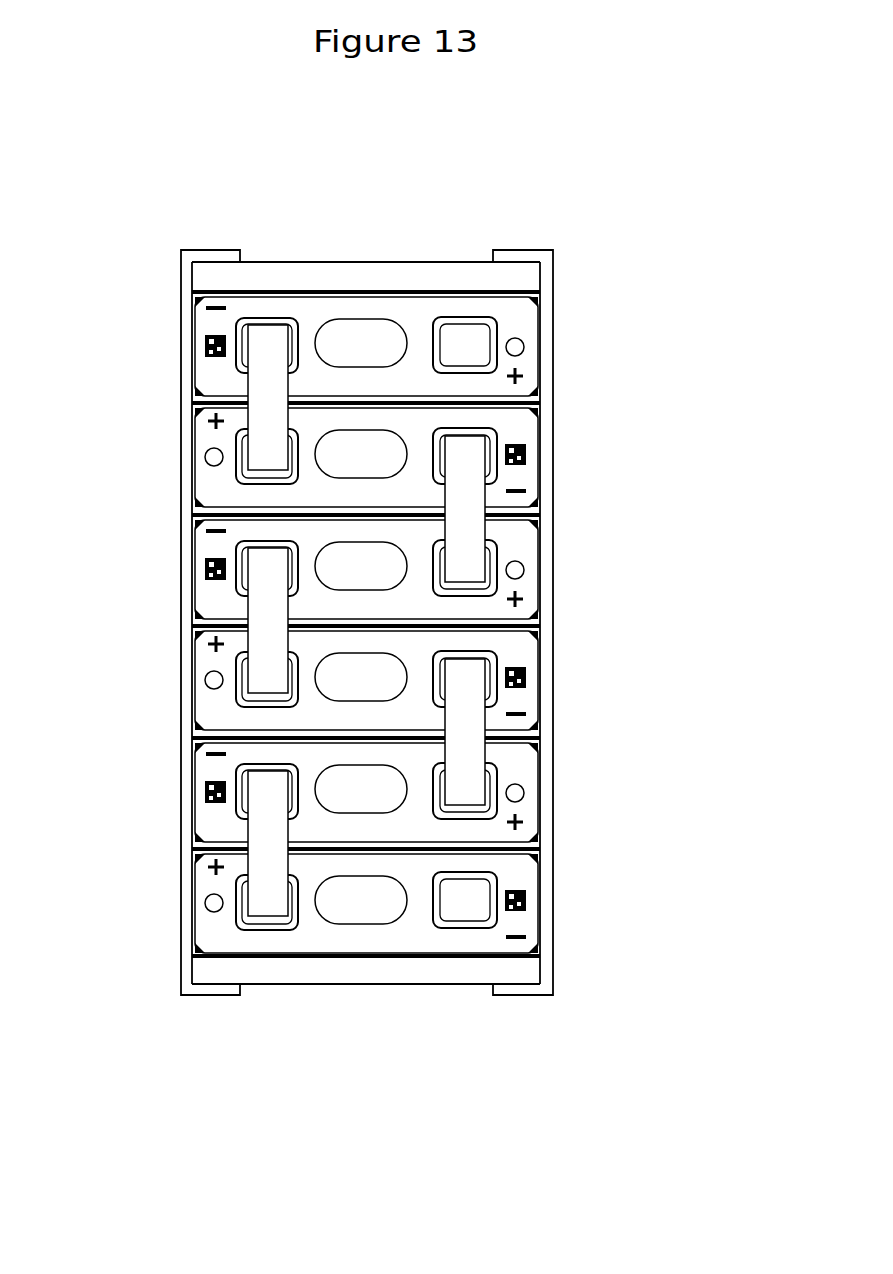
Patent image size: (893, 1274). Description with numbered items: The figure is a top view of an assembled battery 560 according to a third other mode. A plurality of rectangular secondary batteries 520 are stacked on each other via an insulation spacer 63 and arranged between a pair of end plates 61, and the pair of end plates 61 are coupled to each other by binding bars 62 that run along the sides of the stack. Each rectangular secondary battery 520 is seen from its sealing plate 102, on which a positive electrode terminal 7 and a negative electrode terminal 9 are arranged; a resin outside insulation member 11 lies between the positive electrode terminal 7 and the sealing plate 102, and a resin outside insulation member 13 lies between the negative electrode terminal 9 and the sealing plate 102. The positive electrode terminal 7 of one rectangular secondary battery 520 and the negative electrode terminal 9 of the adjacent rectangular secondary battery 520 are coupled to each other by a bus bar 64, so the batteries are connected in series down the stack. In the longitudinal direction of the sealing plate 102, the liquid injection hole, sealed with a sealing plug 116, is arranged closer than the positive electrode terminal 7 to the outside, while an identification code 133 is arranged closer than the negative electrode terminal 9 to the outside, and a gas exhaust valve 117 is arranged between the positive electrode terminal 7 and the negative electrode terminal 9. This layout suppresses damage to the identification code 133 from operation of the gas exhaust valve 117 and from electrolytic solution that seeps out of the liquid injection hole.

The assembled battery 560 is at (107, 143).
The end plate 61 is at (290, 275).
The binding bar 62 is at (545, 458).
The insulation spacer 63 is at (532, 395).
The bus bar 64 is at (266, 390).
The sealing plate 102 is at (420, 310).
The rectangular secondary battery 520 is at (511, 303).
The positive electrode terminal 7 is at (243, 463).
The negative electrode terminal 9 is at (252, 328).
The outside insulation member 11 is at (466, 330).
The outside insulation member 13 is at (262, 318).
The sealing plug 116 is at (525, 347).
The gas exhaust valve 117 is at (360, 345).
The identification code 133 is at (203, 352).